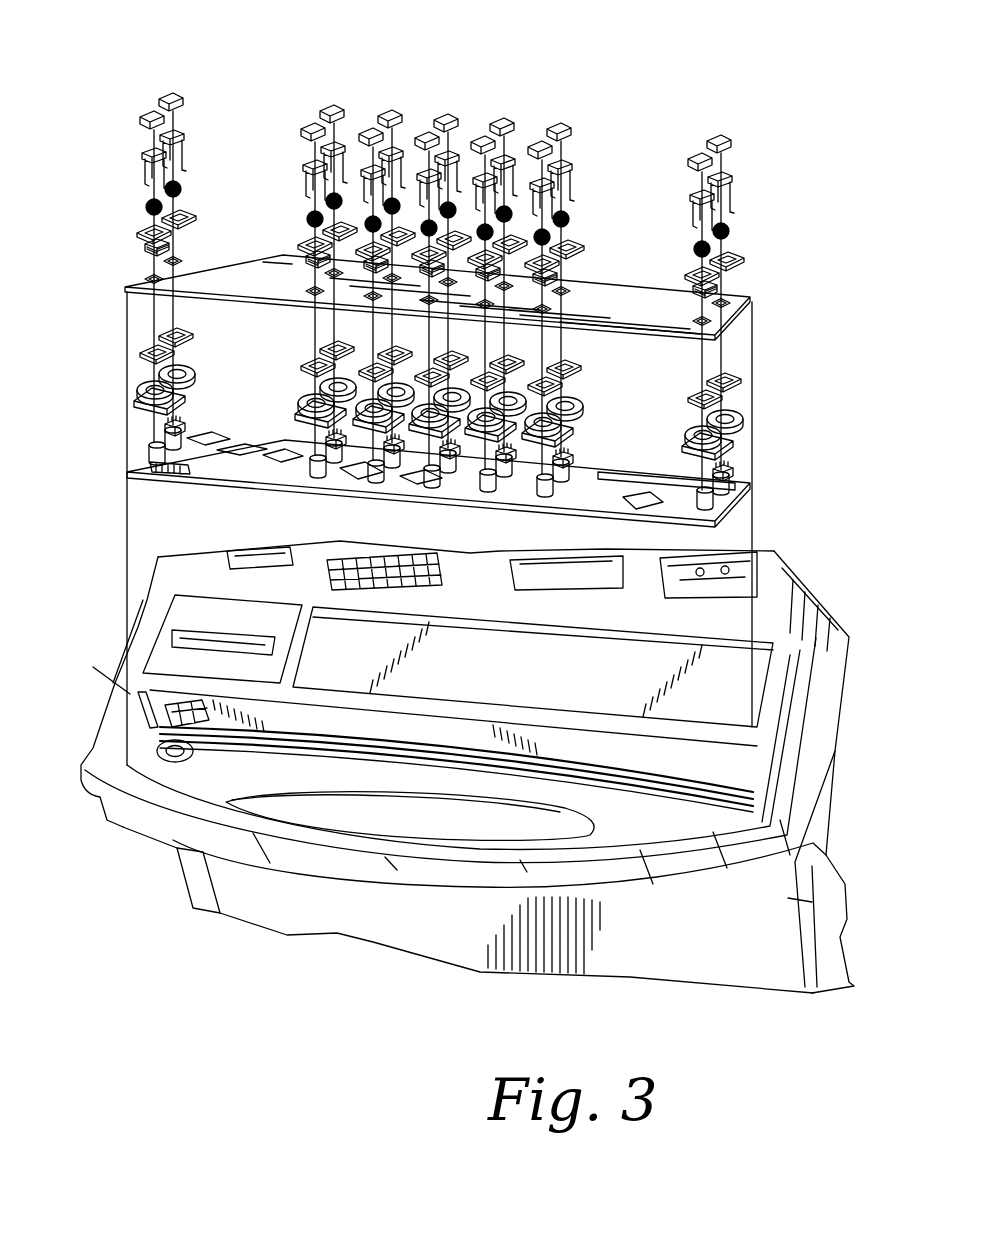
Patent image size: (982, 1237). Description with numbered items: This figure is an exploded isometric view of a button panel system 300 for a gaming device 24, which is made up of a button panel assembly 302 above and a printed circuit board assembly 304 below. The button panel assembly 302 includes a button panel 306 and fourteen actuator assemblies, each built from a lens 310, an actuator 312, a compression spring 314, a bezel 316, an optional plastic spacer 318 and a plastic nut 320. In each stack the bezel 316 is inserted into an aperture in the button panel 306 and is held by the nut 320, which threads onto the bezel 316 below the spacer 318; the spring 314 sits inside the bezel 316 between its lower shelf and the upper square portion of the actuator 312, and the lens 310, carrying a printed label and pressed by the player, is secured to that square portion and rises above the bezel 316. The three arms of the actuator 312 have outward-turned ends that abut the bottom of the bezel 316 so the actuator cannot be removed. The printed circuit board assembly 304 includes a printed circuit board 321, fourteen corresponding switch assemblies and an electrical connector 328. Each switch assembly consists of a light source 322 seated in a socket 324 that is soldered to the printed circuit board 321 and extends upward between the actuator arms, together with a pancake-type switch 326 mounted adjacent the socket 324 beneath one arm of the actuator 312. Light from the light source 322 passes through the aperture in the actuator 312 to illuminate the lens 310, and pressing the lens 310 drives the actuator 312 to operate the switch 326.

The input device 24 is at (230, 72).
The button panel system 300 is at (107, 96).
The button panel assembly 302 is at (835, 518).
The printed circuit board assembly 304 is at (814, 666).
The button panel 306 is at (618, 291).
The lens 310 is at (730, 143).
The actuator 312 is at (732, 181).
The compression spring 314 is at (731, 231).
The bezel 316 is at (739, 266).
The plastic spacer 318 is at (737, 377).
The plastic nut 320 is at (743, 418).
The printed circuit board 321 is at (623, 475).
The light source 322 is at (733, 446).
The socket 324 is at (733, 467).
The switch 326 is at (733, 481).
The electrical connector 328 is at (176, 472).